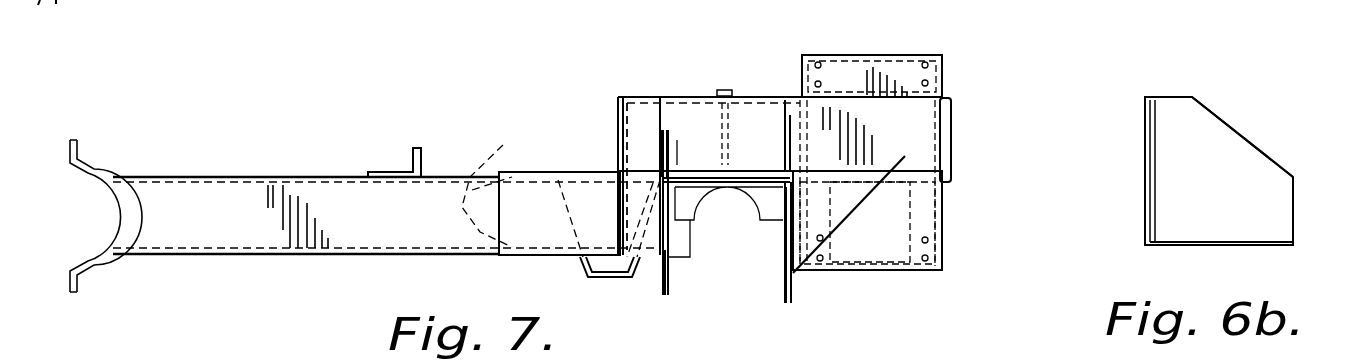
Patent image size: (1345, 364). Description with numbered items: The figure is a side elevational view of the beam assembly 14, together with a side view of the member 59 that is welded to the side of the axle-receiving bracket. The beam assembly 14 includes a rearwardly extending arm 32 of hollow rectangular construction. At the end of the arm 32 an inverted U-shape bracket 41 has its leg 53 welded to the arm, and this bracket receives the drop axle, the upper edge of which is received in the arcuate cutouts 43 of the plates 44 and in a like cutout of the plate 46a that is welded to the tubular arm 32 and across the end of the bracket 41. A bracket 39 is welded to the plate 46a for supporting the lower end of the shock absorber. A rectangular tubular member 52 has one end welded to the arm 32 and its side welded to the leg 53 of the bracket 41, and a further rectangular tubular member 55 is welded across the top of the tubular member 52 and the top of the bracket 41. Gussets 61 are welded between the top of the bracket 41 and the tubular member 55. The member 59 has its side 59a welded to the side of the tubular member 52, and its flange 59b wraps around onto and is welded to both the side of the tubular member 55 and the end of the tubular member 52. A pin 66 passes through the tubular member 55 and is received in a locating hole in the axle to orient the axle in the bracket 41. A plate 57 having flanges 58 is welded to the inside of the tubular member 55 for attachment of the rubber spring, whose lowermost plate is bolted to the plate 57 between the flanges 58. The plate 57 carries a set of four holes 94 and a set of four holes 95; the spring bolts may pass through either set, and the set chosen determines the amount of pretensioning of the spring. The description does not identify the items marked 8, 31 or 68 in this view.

In FIG. 7, the section view arrow 8 is at (763, 5).
In FIG. 7, the beam assembly 14 is at (200, 256).
In FIG. 7, the curved bracket 31 is at (87, 166).
In FIG. 7, the rearwardly extending arm 32 is at (338, 177).
In FIG. 7, the bracket 39 is at (588, 274).
In FIG. 7, the inverted U-shape bracket 41 is at (792, 290).
In FIG. 7, the arcuate cutouts 43 is at (710, 203).
In FIG. 7, the plates 44 is at (695, 188).
In FIG. 7, the plate 46a is at (510, 146).
In FIG. 7, the rectangular tubular member 52 is at (637, 205).
In FIG. 7, the leg 53 is at (667, 295).
In FIG. 7, the rectangular tubular member 55 is at (786, 100).
In FIG. 7, the plate 57 is at (927, 200).
In FIG. 7, the flanges 58 is at (813, 57).
In FIG. 7, the member 59 is at (618, 99).
In FIG. 6B, the member 59 is at (1203, 125).
In FIG. 7, the side 59a is at (618, 123).
In FIG. 6B, the side 59a is at (1230, 180).
In FIG. 7, the flange 59b is at (643, 113).
In FIG. 6B, the flange 59b is at (1147, 208).
In FIG. 7, the gussets 61 is at (660, 137).
In FIG. 7, the pin 66 is at (725, 125).
In FIG. 7, the right wall 68 is at (873, 170).
In FIG. 7, the holes 94 is at (922, 62).
In FIG. 7, the holes 95 is at (820, 87).